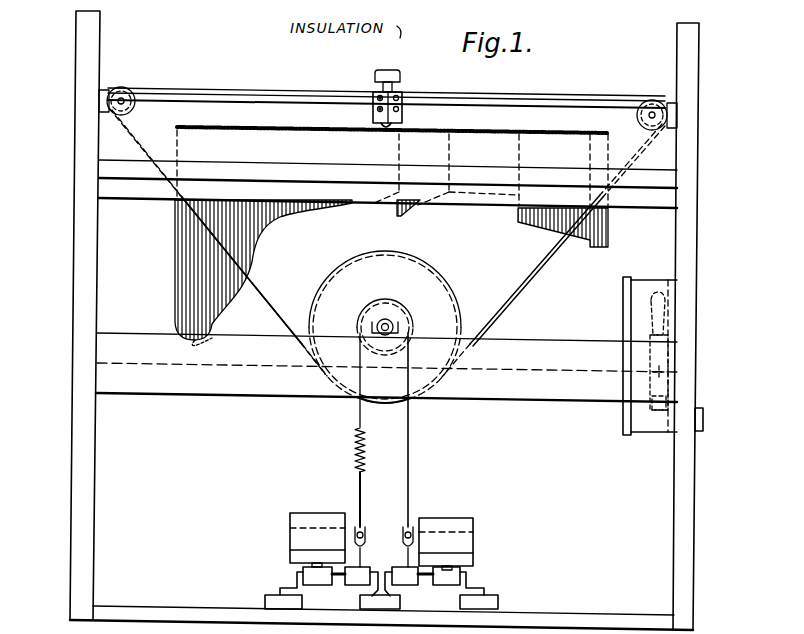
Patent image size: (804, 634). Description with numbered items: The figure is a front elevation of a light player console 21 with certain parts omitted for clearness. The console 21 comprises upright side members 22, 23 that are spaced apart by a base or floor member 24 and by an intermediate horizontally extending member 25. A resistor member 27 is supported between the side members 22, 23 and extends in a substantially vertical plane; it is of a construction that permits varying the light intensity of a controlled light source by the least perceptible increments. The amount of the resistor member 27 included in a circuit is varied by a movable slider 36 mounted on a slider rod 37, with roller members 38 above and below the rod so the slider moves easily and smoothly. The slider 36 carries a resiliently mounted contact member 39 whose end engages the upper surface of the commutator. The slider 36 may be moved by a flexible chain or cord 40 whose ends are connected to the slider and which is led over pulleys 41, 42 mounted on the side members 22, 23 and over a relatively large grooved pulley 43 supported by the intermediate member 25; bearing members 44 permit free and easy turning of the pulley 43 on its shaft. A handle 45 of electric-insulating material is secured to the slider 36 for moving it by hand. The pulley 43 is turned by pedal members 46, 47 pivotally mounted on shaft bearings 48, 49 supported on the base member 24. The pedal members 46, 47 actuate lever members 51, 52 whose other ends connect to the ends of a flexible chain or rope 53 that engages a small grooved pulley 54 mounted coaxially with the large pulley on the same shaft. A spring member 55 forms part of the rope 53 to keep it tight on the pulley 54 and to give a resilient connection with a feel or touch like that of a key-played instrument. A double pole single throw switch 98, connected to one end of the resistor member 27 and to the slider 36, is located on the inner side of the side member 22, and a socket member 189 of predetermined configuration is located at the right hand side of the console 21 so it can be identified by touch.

The light player console 21 is at (733, 243).
The upright side member 22 is at (688, 358).
The upright side member 23 is at (75, 418).
The base or floor member 24 is at (140, 610).
The intermediate horizontally extending member 25 is at (187, 390).
The resistor member 27 is at (272, 228).
The movable slider 36 is at (373, 94).
The slider rod 37 is at (496, 104).
The roller members 38 is at (402, 94).
The resiliently mounted contact member 39 is at (396, 126).
The flexible chain or cord 40 is at (214, 88).
The pulley 41 is at (656, 100).
The pulley 42 is at (112, 90).
The large grooved pulley 43 is at (437, 280).
The bearing members 44 is at (415, 326).
The handle 45 is at (389, 70).
The pedal member 46 is at (308, 518).
The pedal member 47 is at (445, 522).
The shaft bearing 48 is at (300, 578).
The shaft bearing 49 is at (476, 592).
The lever member 51 is at (369, 540).
The lever member 52 is at (404, 556).
The flexible chain or rope 53 is at (412, 468).
The small grooved pulley 54 is at (358, 312).
The spring member 55 is at (353, 447).
The double pole single throw switch 98 is at (672, 330).
The socket member 189 is at (716, 412).